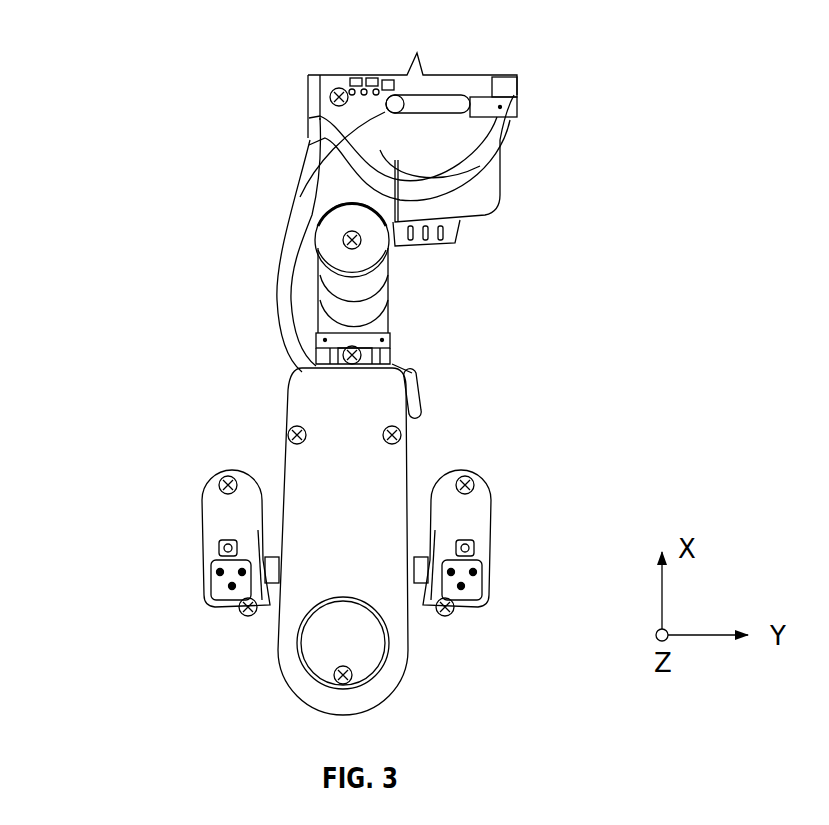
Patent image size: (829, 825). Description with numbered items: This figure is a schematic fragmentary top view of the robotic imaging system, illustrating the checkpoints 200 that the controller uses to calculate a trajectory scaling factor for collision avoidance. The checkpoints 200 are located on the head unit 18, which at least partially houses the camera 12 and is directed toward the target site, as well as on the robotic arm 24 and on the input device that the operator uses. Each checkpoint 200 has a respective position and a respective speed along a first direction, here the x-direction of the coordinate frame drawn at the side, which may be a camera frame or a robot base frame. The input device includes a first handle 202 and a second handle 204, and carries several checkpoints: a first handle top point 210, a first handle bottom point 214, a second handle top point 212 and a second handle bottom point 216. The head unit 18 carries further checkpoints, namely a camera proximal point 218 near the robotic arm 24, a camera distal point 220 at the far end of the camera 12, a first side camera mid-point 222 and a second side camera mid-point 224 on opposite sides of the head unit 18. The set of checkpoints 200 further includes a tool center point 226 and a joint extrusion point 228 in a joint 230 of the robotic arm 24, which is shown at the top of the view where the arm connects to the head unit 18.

The camera 12 is at (283, 384).
The head unit 18 is at (304, 542).
The robotic arm 24 is at (524, 119).
The checkpoints 200 is at (379, 533).
The first handle 202 is at (199, 542).
The second handle 204 is at (494, 542).
The first handle top point 210 is at (220, 470).
The second handle top point 212 is at (473, 468).
The first handle bottom point 214 is at (238, 615).
The second handle bottom point 216 is at (453, 615).
The camera proximal point 218 is at (368, 348).
The camera distal point 220 is at (363, 670).
The first side camera mid-point 222 is at (282, 429).
The second side camera mid-point 224 is at (410, 438).
The tool center point 226 is at (342, 243).
The joint extrusion point 228 is at (332, 90).
The joint 230 is at (290, 167).